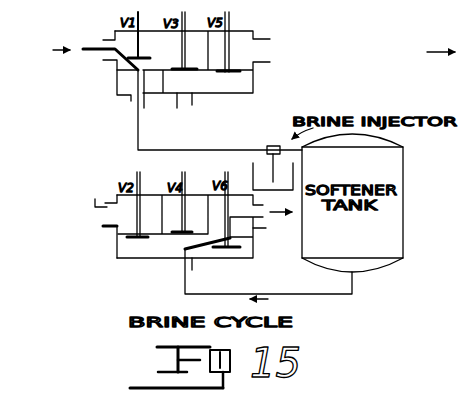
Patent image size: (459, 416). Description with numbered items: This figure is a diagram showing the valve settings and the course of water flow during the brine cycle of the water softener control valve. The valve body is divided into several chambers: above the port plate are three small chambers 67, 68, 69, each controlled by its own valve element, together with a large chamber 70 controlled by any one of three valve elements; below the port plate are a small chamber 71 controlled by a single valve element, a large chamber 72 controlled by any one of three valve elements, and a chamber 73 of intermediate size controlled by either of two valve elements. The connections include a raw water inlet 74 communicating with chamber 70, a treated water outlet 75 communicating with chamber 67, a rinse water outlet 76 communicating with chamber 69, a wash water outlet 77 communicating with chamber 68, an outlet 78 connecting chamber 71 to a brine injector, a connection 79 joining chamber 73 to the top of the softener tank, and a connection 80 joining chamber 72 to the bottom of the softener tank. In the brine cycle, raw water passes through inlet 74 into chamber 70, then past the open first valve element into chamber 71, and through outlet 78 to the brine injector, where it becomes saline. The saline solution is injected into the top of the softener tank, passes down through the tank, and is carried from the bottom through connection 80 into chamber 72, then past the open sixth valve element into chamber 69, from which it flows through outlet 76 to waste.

The raw water inlet 74 is at (97, 33).
The large chamber 70 is at (175, 132).
The small chamber 68 is at (230, 50).
The small chamber 71 is at (153, 81).
The chamber of intermediate size 73 is at (208, 81).
The wash water outlet 77 is at (258, 50).
The outlet 78 is at (131, 103).
The connection 79 is at (192, 107).
The treated water outlet 75 is at (94, 197).
The small chamber 67 is at (140, 214).
The large chamber 72 is at (185, 246).
The small chamber 69 is at (261, 207).
The rinse water outlet 76 is at (266, 228).
The connection 80 is at (190, 271).